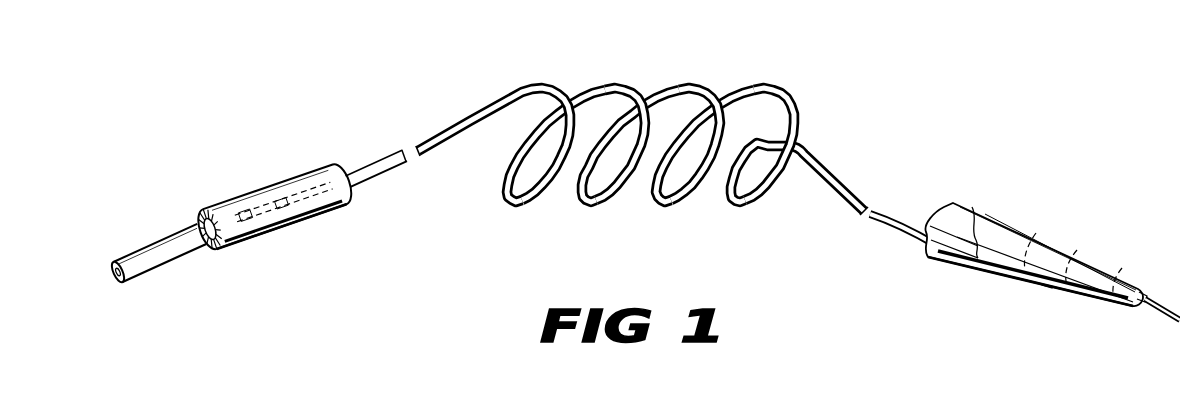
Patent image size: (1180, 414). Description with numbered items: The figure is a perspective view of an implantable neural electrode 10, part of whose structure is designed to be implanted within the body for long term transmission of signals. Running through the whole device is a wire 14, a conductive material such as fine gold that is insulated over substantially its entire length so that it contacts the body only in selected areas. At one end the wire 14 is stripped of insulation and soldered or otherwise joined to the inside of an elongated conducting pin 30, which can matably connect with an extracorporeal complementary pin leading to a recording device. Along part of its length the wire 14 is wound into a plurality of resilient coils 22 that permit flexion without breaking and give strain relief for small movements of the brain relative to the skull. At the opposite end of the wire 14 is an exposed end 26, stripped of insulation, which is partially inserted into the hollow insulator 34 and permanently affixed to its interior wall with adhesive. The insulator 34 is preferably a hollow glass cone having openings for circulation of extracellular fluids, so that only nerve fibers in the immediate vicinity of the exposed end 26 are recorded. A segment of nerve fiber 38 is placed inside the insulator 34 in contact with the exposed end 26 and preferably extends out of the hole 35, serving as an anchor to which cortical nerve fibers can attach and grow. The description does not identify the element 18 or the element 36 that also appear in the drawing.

The electrode 10 is at (642, 41).
The wire 14 is at (433, 120).
The helical coil 18 is at (592, 203).
The resilient coils 22 is at (791, 100).
The exposed end 26 is at (253, 205).
The pin 30 is at (228, 244).
The insulator 34 is at (1063, 237).
The hole 35 is at (1148, 293).
The lead cable 36 is at (910, 230).
The nerve fiber segment 38 is at (1167, 313).